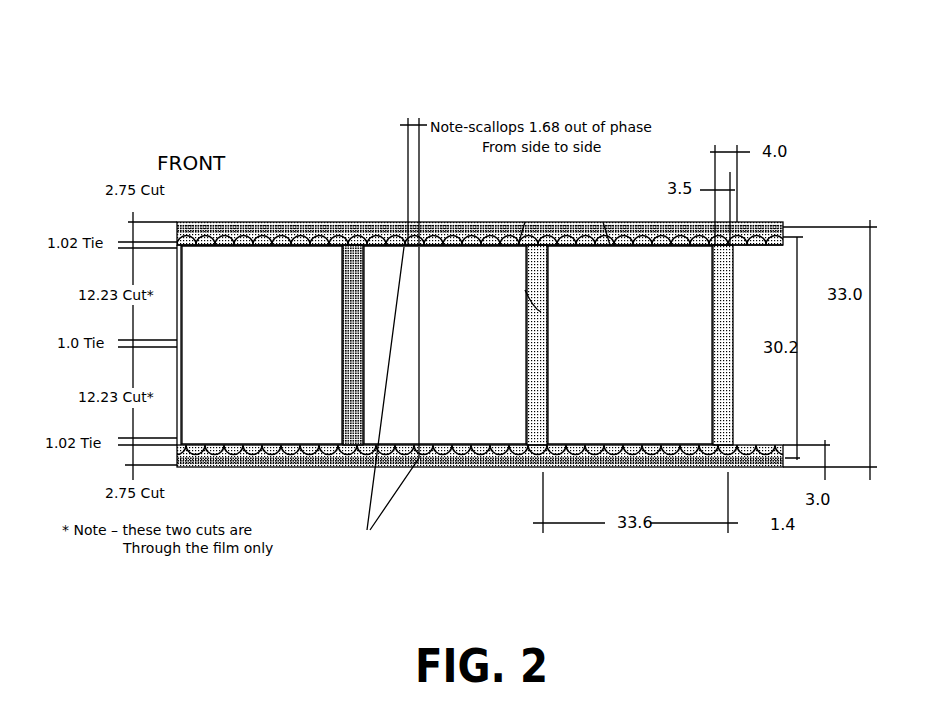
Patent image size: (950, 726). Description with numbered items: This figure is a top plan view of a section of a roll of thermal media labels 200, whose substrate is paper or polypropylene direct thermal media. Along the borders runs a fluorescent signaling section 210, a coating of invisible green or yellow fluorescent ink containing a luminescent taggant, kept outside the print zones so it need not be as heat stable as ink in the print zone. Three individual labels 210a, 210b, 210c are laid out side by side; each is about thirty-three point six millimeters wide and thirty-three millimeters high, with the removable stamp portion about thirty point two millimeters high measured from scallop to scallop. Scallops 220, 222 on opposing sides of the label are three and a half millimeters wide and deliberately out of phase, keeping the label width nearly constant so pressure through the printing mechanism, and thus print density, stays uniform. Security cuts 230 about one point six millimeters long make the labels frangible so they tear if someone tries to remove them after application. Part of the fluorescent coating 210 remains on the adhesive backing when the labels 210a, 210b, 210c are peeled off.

The roll of thermal media labels 200 is at (176, 104).
The fluorescent signaling section 210 is at (282, 222).
The individual label 210a is at (262, 345).
The individual label 210b is at (445, 345).
The individual label 210c is at (630, 345).
The scallops 220 is at (390, 228).
The scallops 222 is at (450, 456).
The security cuts 230 is at (378, 352).